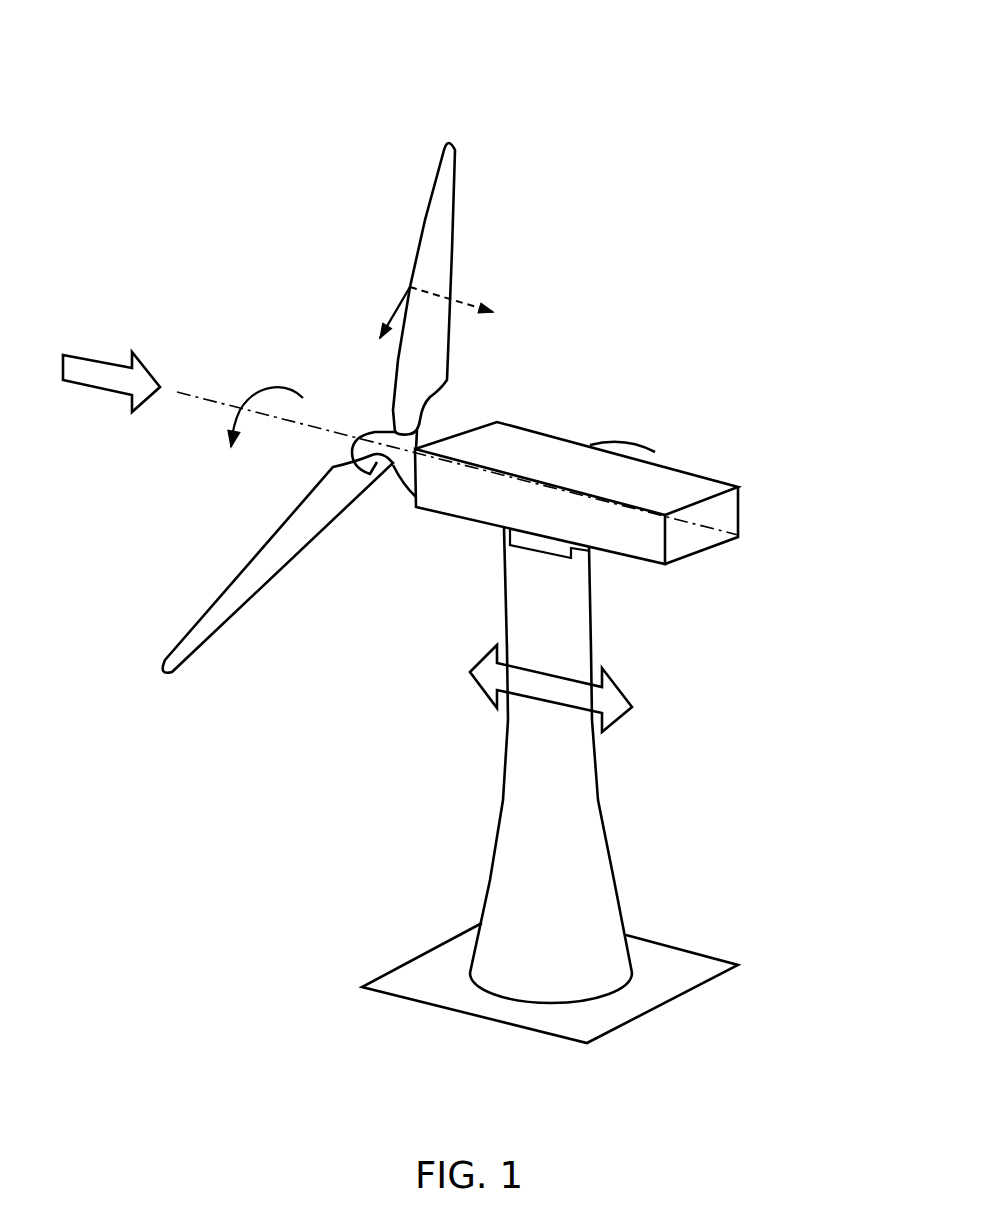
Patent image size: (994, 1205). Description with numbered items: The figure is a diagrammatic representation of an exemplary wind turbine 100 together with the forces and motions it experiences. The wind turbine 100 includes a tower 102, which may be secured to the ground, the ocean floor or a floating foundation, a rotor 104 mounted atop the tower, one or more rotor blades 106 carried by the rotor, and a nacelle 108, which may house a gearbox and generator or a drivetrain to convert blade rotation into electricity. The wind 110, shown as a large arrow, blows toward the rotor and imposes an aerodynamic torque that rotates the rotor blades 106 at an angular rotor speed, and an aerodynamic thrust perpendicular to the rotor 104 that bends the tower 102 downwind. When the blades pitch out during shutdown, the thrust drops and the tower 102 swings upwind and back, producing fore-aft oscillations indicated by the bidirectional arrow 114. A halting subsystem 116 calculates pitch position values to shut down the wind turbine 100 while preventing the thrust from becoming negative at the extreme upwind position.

The wind turbine 100 is at (717, 72).
The tower 102 is at (602, 813).
The rotor 104 is at (403, 485).
The rotor blades 106 is at (453, 227).
The nacelle 108 is at (732, 515).
The wind 110 is at (90, 360).
The bidirectional arrow 114 is at (483, 690).
The halting subsystem 116 is at (532, 550).